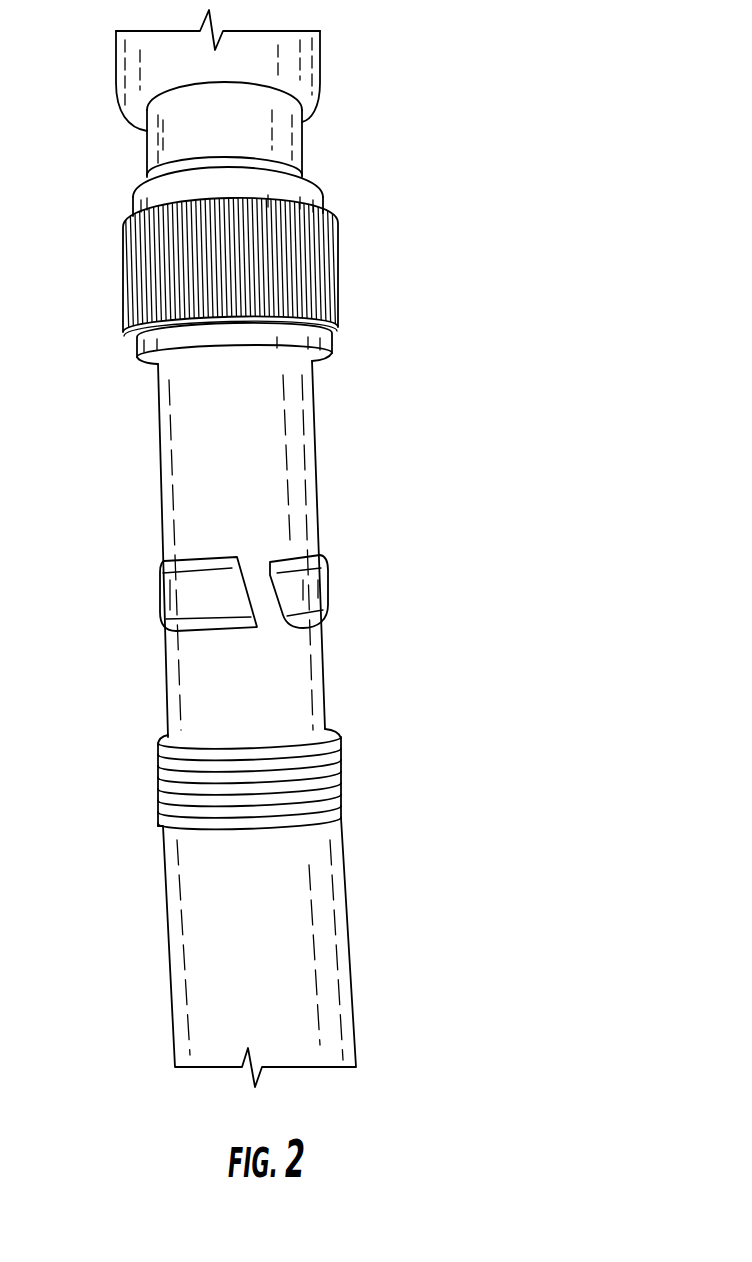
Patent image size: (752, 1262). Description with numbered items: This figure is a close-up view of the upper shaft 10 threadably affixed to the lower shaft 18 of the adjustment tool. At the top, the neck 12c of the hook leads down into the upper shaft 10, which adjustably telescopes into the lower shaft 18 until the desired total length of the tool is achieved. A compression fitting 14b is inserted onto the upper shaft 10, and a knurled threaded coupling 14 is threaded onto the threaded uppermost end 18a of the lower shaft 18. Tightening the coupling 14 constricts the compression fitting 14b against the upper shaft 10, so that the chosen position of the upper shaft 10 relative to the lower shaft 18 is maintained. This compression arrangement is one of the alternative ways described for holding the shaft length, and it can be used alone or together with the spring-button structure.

The neck 12c is at (305, 60).
The threaded coupling 14 is at (208, 257).
The upper shaft 10 is at (278, 435).
The compression fitting 14b is at (315, 590).
The threaded uppermost end 18a is at (325, 782).
The lower shaft 18 is at (212, 923).